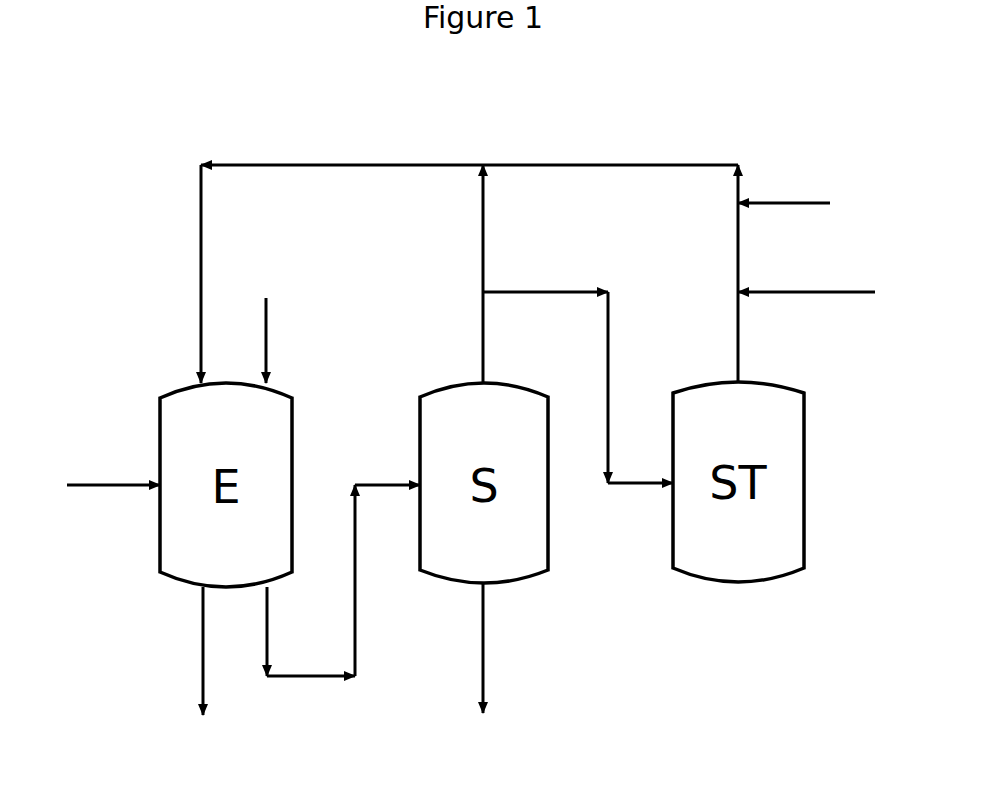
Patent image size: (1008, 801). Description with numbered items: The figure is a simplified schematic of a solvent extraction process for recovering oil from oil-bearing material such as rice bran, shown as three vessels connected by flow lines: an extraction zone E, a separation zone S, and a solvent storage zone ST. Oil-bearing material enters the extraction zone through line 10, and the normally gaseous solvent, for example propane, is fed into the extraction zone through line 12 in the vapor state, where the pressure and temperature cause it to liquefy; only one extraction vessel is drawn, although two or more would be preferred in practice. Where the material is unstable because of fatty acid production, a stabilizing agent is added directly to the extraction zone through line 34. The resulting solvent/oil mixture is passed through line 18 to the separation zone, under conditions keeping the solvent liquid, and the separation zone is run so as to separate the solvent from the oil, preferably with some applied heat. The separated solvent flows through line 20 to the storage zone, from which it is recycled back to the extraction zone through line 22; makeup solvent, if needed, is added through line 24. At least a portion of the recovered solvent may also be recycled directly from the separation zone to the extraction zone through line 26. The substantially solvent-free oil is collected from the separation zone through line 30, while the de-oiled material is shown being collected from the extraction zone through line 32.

The line 10 is at (270, 335).
The line 12 is at (198, 250).
The line 18 is at (360, 635).
The line 20 is at (543, 288).
The line 22 is at (340, 165).
The line 24 is at (790, 288).
The line 26 is at (480, 225).
The line 30 is at (490, 632).
The line 32 is at (198, 649).
The line 34 is at (105, 482).